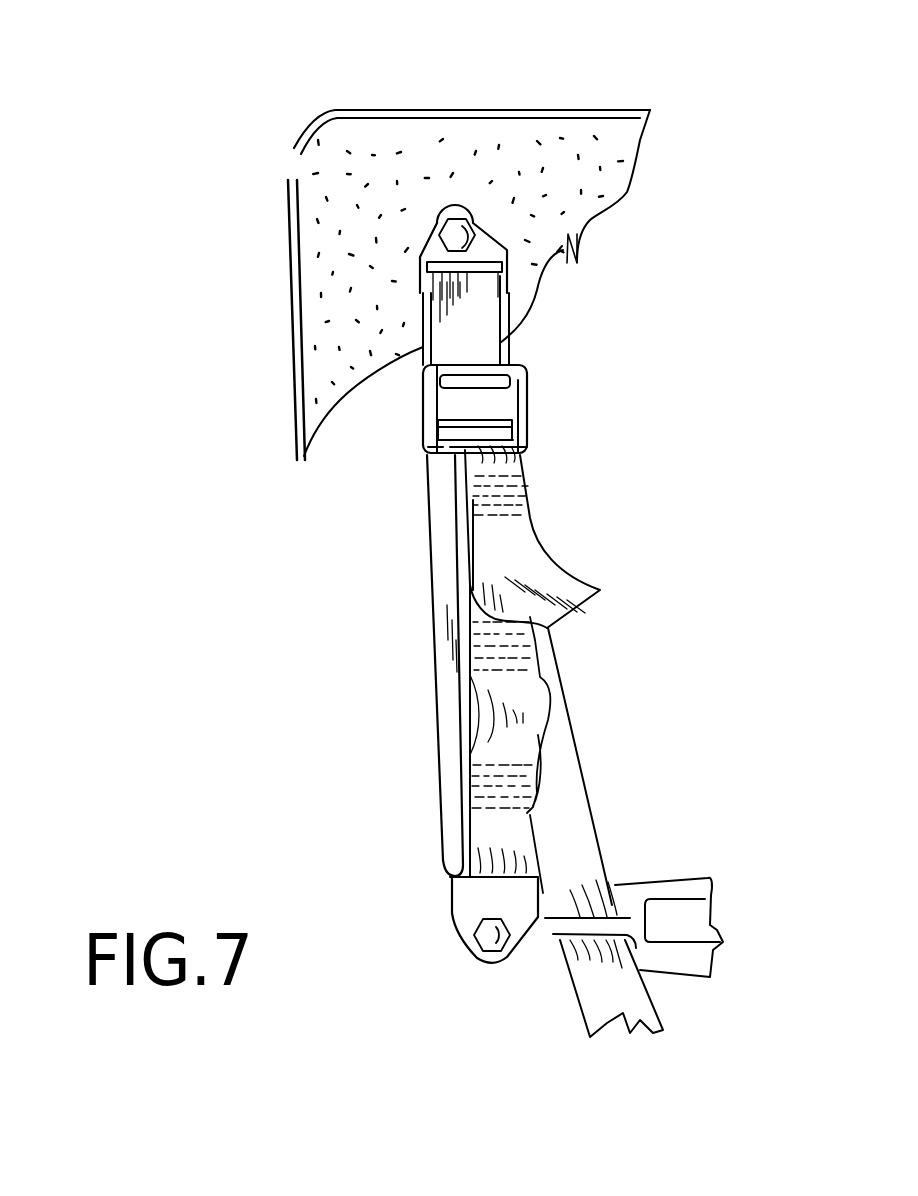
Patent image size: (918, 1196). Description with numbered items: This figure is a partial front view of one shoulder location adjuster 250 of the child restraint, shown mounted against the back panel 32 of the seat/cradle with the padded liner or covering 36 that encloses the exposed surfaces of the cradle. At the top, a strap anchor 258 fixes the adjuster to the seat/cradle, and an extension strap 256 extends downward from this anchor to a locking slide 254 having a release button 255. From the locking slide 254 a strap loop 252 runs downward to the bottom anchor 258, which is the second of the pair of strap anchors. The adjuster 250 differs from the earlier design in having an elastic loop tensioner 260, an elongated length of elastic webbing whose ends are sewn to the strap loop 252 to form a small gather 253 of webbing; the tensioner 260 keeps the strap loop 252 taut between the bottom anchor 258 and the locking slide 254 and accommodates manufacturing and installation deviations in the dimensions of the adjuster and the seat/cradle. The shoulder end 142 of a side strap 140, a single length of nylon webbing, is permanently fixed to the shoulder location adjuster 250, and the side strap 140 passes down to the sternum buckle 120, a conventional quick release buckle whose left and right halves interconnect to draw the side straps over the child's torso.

The padded liner or covering 36 is at (413, 157).
The back panel 32 is at (290, 272).
The strap anchor 258 is at (487, 250).
The extension strap 256 is at (487, 325).
The locking slide 254 is at (561, 420).
The release button 255 is at (500, 430).
The shoulder end 142 is at (527, 497).
The strap loop 252 is at (442, 547).
The shoulder location adjuster 250 is at (465, 596).
The elastic loop tensioner 260 is at (480, 688).
The gather 253 is at (513, 747).
The side strap 140 is at (598, 790).
The sternum buckle 120 is at (691, 866).